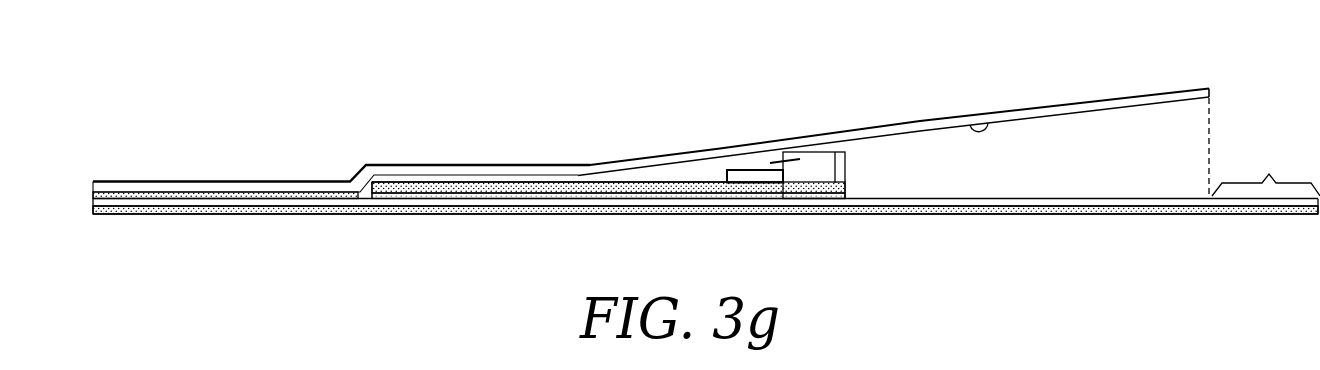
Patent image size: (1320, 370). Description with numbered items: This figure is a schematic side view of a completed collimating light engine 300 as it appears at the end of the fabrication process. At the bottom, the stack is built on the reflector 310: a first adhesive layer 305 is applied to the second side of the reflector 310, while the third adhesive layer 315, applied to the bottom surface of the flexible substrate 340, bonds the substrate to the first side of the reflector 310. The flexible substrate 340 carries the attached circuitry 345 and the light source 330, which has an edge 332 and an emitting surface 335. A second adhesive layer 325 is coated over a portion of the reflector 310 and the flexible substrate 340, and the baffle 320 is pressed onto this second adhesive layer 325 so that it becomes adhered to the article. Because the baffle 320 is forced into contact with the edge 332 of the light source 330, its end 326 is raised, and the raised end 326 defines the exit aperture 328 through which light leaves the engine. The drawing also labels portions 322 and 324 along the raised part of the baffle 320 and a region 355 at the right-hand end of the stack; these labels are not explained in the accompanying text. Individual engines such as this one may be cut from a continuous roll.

The collimating light engine 300 is at (133, 67).
The first adhesive layer 305 is at (328, 212).
The reflector 310 is at (257, 201).
The third adhesive layer 315 is at (428, 194).
The baffle 320 is at (116, 188).
The bent portion of flap 322 is at (985, 124).
The tilted flap 324 is at (1058, 105).
The second adhesive layer 325 is at (193, 197).
The end 326 is at (1211, 88).
The exit aperture 328 is at (1212, 123).
The light source 330 is at (818, 165).
The edge 332 is at (783, 150).
The emitting surface 335 is at (847, 160).
The flexible substrate 340 is at (493, 186).
The circuitry 345 is at (754, 176).
The spacing width 355 is at (1266, 172).